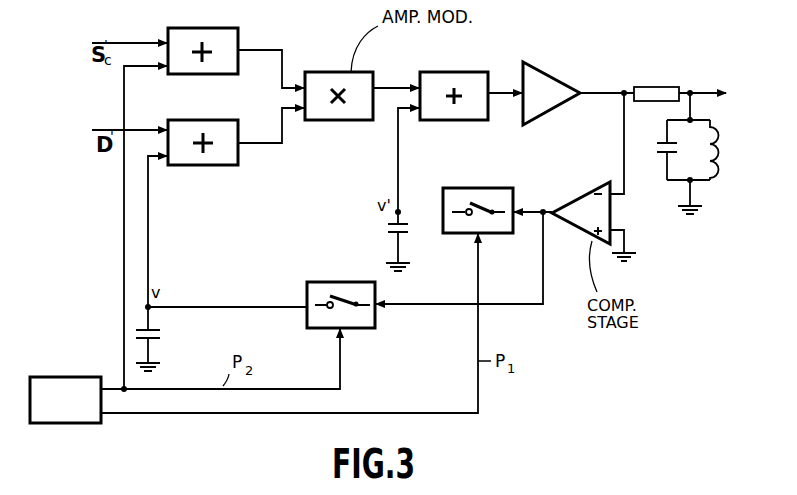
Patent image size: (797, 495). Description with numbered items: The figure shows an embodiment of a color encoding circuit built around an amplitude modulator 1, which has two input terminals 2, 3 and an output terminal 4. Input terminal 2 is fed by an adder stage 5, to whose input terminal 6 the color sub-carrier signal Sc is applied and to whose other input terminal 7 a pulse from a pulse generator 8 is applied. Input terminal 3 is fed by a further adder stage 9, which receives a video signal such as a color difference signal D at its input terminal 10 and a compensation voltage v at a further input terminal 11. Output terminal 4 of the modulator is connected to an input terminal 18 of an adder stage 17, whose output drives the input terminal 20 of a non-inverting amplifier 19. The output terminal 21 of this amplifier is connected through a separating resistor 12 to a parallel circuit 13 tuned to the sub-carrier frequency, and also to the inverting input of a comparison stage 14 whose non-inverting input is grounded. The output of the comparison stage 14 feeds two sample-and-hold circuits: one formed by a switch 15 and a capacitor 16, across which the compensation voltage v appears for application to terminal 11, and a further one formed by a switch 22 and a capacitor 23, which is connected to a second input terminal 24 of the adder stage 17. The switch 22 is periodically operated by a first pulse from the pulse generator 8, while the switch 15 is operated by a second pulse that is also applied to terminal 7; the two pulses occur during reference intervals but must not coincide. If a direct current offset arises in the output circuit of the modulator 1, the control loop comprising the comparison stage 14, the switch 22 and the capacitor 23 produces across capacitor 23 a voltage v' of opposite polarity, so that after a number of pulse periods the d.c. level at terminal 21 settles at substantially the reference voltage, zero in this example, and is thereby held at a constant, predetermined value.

The amplitude modulator 1 is at (326, 72).
The input terminal 2 is at (304, 86).
The input terminal 3 is at (304, 114).
The output terminal 4 is at (379, 84).
The adder stage 5 is at (225, 28).
The input terminal 6 is at (168, 41).
The input terminal 7 is at (166, 70).
The pulse generator 8 is at (61, 376).
The further adder stage 9 is at (224, 166).
The input terminal 10 is at (168, 130).
The further input terminal 11 is at (166, 164).
The separating resistor 12 is at (658, 80).
The parallel circuit 13 is at (711, 170).
The comparison stage 14 is at (584, 228).
The switch 15 is at (362, 329).
The capacitor 16 is at (157, 334).
The adder stage 17 is at (455, 72).
The input terminal 18 is at (419, 86).
The non-inverting amplifier 19 is at (554, 110).
The input terminal 20 is at (522, 88).
The output terminal 21 is at (624, 91).
The switch 22 is at (482, 188).
The capacitor 23 is at (408, 229).
The second input terminal 24 is at (416, 114).